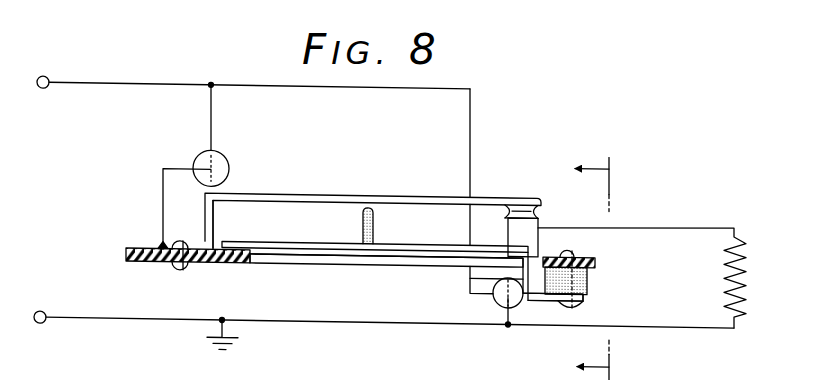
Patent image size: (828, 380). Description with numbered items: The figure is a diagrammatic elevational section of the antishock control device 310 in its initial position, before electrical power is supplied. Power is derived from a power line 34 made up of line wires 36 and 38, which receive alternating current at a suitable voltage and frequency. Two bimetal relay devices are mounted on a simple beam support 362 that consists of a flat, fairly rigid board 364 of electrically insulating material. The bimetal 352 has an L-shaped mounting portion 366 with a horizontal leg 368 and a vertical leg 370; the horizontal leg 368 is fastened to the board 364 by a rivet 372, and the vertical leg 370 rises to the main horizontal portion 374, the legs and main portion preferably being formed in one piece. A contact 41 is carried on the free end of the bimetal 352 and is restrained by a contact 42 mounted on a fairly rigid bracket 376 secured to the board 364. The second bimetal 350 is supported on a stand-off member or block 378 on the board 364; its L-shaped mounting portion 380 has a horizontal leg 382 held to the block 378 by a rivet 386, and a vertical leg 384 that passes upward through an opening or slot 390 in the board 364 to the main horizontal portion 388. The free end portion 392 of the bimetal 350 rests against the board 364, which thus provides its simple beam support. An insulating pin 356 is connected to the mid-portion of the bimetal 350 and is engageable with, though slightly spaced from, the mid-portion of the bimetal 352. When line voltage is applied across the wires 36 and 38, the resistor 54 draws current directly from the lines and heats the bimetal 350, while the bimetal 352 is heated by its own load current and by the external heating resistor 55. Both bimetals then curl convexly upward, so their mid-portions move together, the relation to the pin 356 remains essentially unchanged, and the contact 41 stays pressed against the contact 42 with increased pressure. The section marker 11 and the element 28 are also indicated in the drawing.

The antishock control device 310 is at (144, 44).
The power line 34 is at (54, 153).
The line wire 36 is at (102, 80).
The line wire 38 is at (100, 318).
The external heating resistor 55 is at (199, 151).
The L-shaped mounting portion 366 is at (186, 203).
The horizontal leg 368 is at (158, 240).
The board 364 is at (136, 245).
The simple beam support 362 is at (151, 246).
The rivet 372 is at (179, 262).
The vertical leg 370 is at (213, 206).
The main horizontal portion 374 is at (373, 190).
The bimetal relay device 352 is at (348, 187).
The bimetal relay device 350 is at (375, 193).
The main horizontal portion 388 is at (424, 243).
The free end portion 392 is at (375, 204).
The insulating pin 356 is at (362, 208).
The opening or slot 390 is at (386, 279).
The L-shaped mounting portion 380 is at (535, 302).
The rivet 386 is at (567, 295).
The resistor 54 is at (494, 291).
The vertical leg 384 is at (497, 275).
The contact 41 is at (541, 198).
The contact 42 is at (539, 209).
The bracket 376 is at (540, 230).
The stand-off member or block 378 is at (588, 273).
The horizontal leg 382 is at (590, 296).
The resistor 28 is at (750, 251).
The section line 11- 11 is at (611, 261).